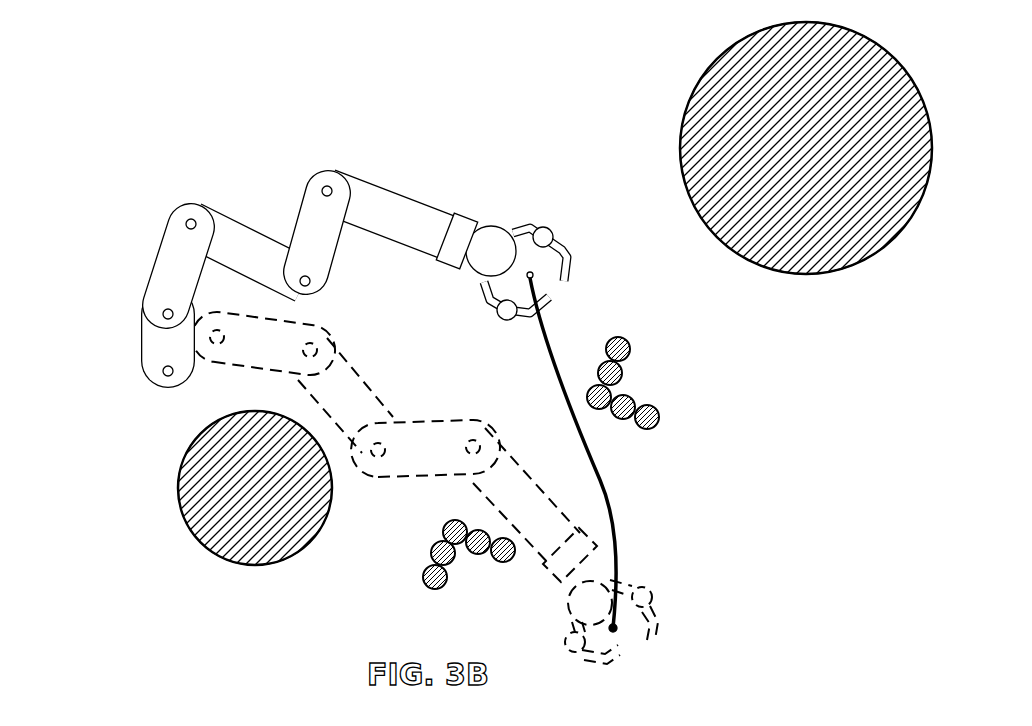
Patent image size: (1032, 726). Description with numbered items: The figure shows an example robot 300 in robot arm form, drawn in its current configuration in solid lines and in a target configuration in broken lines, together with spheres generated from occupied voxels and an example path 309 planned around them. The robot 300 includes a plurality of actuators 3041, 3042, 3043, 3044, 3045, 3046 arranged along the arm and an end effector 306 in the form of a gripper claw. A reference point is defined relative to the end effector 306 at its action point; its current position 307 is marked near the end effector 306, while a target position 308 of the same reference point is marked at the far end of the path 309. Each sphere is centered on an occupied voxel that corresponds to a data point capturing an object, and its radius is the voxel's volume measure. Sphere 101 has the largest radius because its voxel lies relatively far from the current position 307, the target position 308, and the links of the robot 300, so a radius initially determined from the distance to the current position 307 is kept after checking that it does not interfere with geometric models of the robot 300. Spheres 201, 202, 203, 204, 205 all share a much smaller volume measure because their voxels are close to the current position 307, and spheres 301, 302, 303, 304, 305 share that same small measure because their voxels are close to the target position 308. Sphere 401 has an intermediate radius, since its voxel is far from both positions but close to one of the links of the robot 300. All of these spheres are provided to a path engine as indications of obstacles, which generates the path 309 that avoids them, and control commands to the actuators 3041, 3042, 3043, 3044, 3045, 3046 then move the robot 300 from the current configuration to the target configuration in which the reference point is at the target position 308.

The sphere 101 is at (842, 265).
The sphere 401 is at (242, 563).
The robot 300 is at (70, 232).
The actuator 3041 is at (163, 370).
The actuator 3042 is at (163, 313).
The actuator 3043 is at (190, 220).
The actuator 3044 is at (305, 286).
The actuator 3045 is at (325, 185).
The actuator 3046 is at (462, 212).
The end effector 306 is at (481, 231).
The current position 307 is at (533, 272).
The target position 308 is at (615, 632).
The path 309 is at (617, 533).
The sphere 201 is at (610, 338).
The sphere 202 is at (623, 363).
The sphere 203 is at (600, 409).
The sphere 204 is at (627, 396).
The sphere 205 is at (647, 429).
The sphere 301 is at (511, 559).
The sphere 302 is at (475, 554).
The sphere 303 is at (447, 523).
The sphere 304 is at (448, 565).
The sphere 305 is at (426, 585).